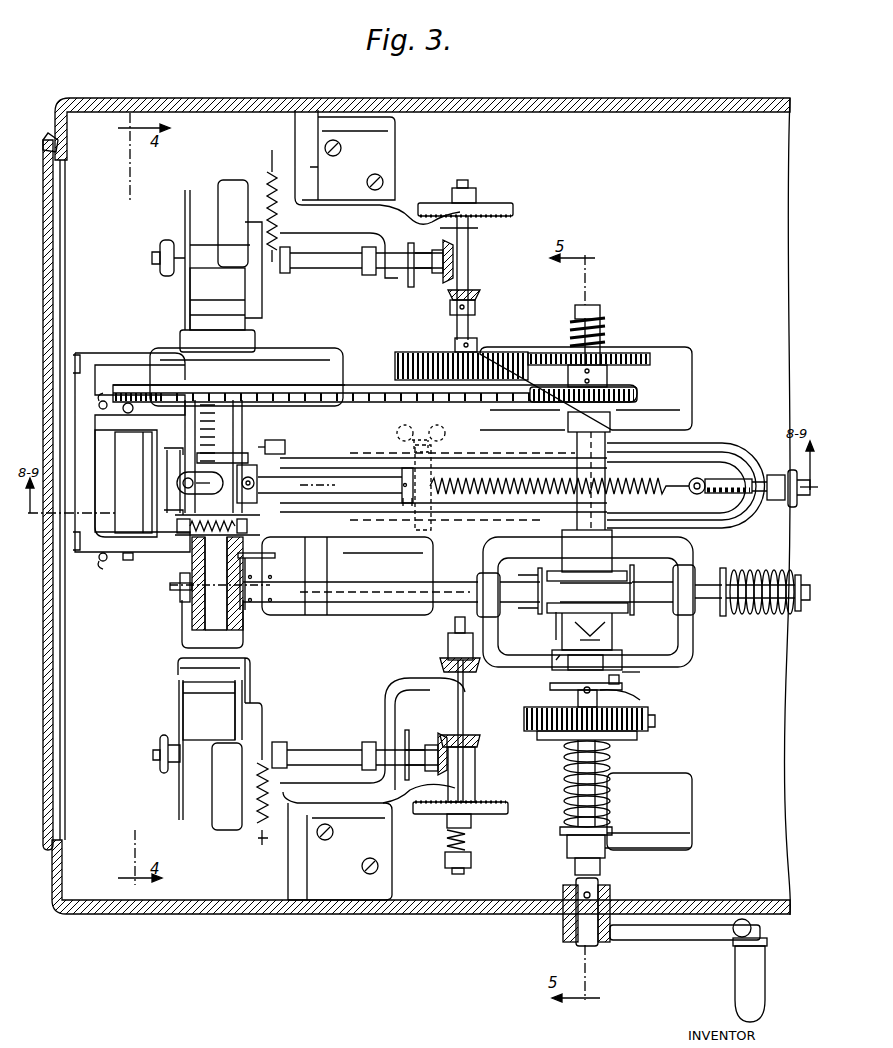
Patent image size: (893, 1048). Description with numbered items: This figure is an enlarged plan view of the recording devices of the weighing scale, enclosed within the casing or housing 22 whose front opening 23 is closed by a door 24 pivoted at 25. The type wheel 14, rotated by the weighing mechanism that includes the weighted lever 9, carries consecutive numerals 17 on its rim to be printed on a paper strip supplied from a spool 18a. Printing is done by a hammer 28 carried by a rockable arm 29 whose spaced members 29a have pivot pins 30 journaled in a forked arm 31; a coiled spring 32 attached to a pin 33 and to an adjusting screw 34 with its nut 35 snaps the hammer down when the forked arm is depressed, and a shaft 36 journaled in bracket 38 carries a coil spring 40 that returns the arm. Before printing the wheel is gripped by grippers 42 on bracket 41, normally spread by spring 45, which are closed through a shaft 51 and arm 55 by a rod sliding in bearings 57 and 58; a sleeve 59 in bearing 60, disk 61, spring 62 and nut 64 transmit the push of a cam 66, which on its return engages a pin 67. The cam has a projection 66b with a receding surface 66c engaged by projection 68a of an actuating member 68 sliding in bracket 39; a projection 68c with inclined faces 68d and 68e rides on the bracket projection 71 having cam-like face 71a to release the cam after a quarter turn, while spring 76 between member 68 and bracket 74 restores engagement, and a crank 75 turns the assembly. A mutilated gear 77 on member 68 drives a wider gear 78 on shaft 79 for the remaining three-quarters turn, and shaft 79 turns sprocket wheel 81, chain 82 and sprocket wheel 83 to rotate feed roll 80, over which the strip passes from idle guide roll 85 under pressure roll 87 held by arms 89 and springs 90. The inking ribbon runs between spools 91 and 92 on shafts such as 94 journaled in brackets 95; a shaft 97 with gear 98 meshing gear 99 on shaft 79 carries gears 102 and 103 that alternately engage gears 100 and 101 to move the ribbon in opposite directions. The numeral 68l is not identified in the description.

The weighted lever 9 is at (330, 480).
The type wheel 14 is at (250, 384).
The numerals 17 is at (242, 418).
The spool 18a is at (445, 506).
The casing or housing 22 is at (224, 914).
The front opening 23 is at (66, 710).
The door 24 is at (43, 762).
The pivot 25 is at (47, 137).
The hammer or impresser 28 is at (288, 440).
The rockable arm 29 is at (362, 456).
The spaced members 29a is at (400, 486).
The pivot pins 30 is at (575, 458).
The forked arm 31 is at (702, 443).
The coiled spring 32 is at (624, 488).
The pin 33 is at (405, 502).
The adjusting screw 34 is at (702, 481).
The nut 35 is at (785, 470).
The shaft 36 is at (600, 312).
The bracket 38 is at (610, 421).
The bracket 39 is at (692, 660).
The coil spring 40 is at (605, 332).
The bracket 41 is at (306, 360).
The grippers 42 is at (250, 528).
The spring 45 is at (180, 590).
The shaft 51 is at (240, 636).
The arm 55 is at (195, 600).
The bearing 57 is at (340, 603).
The bearing 58 is at (478, 580).
The sleeve 59 is at (724, 584).
The bearing 60 is at (690, 560).
The disk or washer 61 is at (722, 617).
The spring 62 is at (760, 616).
The nut 64 is at (798, 613).
The cam 66 is at (548, 571).
The projection 66b is at (612, 622).
The cam-like outer surface 66c is at (612, 640).
The pin 67 is at (540, 575).
The actuating member 68 is at (560, 650).
The projection 68a is at (596, 592).
The projection 68c is at (545, 705).
The inclined face 68d is at (642, 700).
The inclined face 68e is at (560, 680).
The arm 68l is at (556, 628).
The projection 71 is at (622, 679).
The inclined or cam-like face 71a is at (642, 680).
The bracket 74 is at (655, 848).
The operating member or crank 75 is at (665, 941).
The spring 76 is at (607, 760).
The gear 77 is at (545, 740).
The gear 78 is at (650, 728).
The shaft 79 is at (542, 453).
The feed roll 80 is at (113, 446).
The sprocket wheel 81 is at (637, 393).
The chain 82 is at (385, 385).
The sprocket wheel 83 is at (113, 353).
The idle guide roll 85 is at (170, 470).
The pressure roll 87 is at (133, 482).
The arms 89 is at (133, 410).
The springs 90 is at (90, 588).
The spool 91 is at (185, 222).
The spool 92 is at (180, 722).
The shaft 94 is at (323, 262).
The brackets 95 is at (379, 505).
The shaft 97 is at (470, 256).
The gear 98 is at (404, 355).
The gear 99 is at (555, 352).
The gear 100 is at (440, 746).
The gear 101 is at (445, 280).
The gear 102 is at (470, 748).
The gear 103 is at (480, 296).